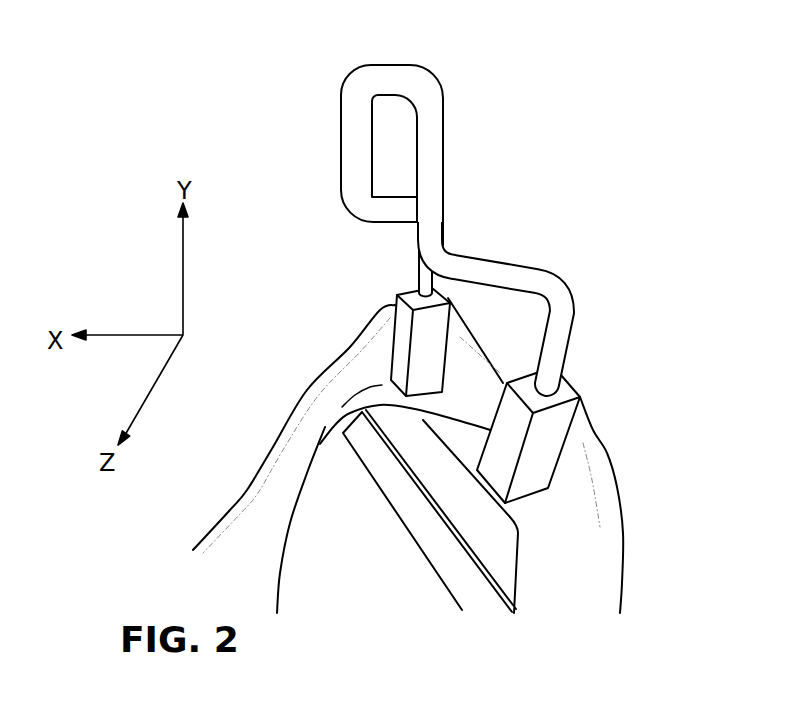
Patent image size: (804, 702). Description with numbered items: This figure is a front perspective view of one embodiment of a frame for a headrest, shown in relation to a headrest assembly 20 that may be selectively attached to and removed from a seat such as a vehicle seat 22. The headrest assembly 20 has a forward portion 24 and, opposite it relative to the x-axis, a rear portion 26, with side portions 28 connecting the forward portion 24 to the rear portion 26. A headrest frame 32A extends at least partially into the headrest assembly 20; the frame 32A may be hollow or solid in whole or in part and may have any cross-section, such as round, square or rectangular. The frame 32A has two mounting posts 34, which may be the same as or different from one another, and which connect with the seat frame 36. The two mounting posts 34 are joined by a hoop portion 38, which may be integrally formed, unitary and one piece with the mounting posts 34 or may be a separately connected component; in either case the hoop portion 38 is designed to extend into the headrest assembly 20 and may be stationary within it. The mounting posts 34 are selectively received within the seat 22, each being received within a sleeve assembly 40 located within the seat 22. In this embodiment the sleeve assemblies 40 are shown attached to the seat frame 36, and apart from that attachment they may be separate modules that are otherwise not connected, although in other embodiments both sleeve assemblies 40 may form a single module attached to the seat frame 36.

The headrest assembly 20 is at (442, 315).
The vehicle seat 22 is at (600, 450).
The forward portion 24 is at (338, 131).
The rear portion 26 is at (459, 201).
The side portions 28 is at (562, 497).
The headrest frame 32A is at (358, 131).
The mounting posts 34 is at (417, 272).
The seat frame 36 is at (541, 580).
The hoop portion 38 is at (350, 147).
The sleeve assemblies 40 is at (400, 408).